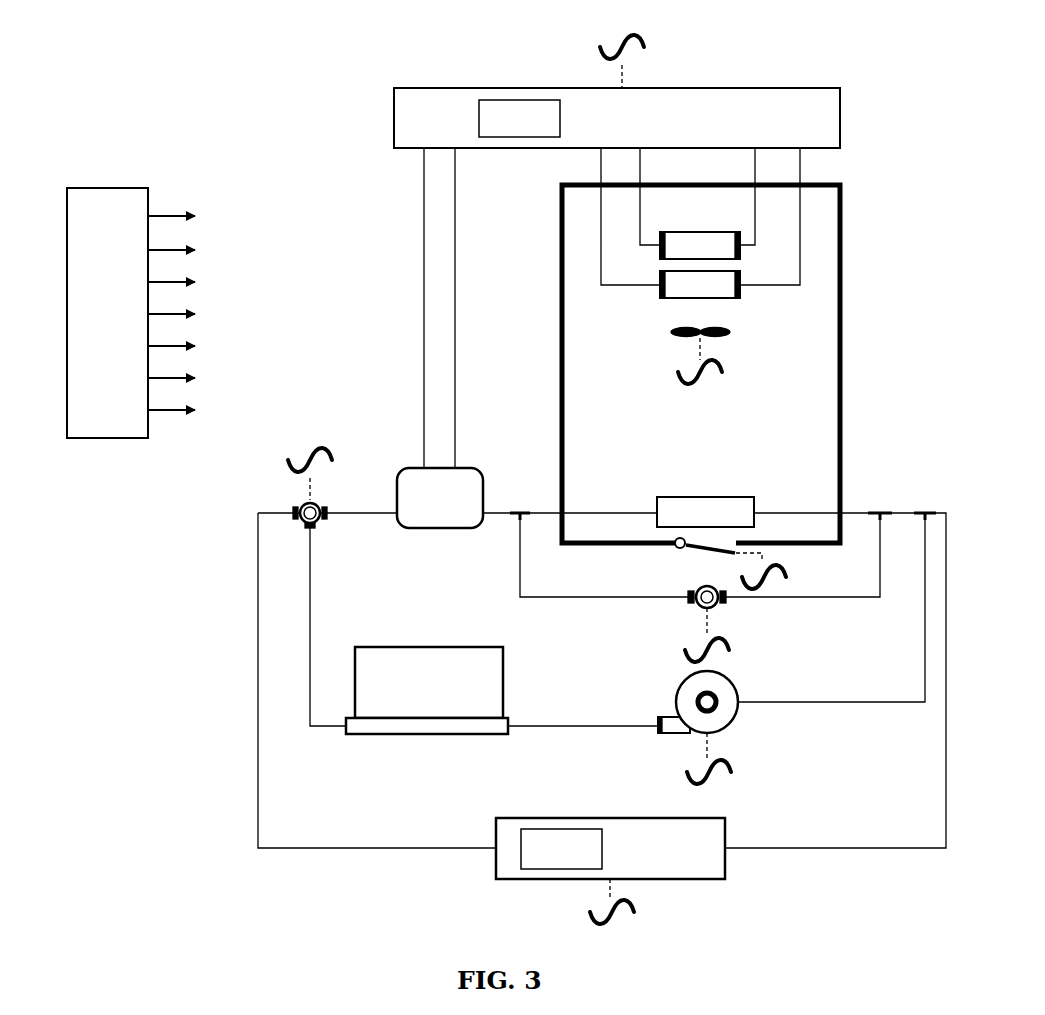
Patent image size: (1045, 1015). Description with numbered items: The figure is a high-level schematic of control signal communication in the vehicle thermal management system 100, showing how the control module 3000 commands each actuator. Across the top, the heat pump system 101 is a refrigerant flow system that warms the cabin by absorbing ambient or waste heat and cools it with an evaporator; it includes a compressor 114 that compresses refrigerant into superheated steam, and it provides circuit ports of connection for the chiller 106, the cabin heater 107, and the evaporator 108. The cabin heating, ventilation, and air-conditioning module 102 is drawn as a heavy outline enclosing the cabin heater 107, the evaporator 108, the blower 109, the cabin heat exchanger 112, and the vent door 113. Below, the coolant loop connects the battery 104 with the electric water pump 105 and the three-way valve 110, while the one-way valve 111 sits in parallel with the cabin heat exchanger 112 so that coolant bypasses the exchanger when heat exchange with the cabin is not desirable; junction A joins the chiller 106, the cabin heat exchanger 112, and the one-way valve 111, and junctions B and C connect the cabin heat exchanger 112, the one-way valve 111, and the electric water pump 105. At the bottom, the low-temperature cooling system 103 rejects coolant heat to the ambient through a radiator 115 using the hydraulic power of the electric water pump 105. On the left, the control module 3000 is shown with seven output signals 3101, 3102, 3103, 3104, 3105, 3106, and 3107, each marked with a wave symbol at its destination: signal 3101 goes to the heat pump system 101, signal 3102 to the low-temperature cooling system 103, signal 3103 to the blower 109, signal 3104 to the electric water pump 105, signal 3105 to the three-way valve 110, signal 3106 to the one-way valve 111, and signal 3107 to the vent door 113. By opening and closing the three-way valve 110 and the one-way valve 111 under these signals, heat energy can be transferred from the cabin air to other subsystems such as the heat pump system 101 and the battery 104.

The vehicle thermal management system 100 is at (350, 175).
The heat pump system 101 is at (840, 122).
The cabin heating, ventilation, and air-conditioning (HVAC) module 102 is at (560, 360).
The low-temperature cooling system 103 is at (727, 818).
The battery 104 is at (428, 735).
The electric water pump 105 is at (712, 708).
The chiller 106 is at (405, 468).
The cabin heater 107 is at (670, 232).
The evaporator 108 is at (663, 302).
The blower 109 is at (688, 338).
The three-way valve 110 is at (320, 523).
The one-way valve 111 is at (722, 605).
The cabin heat exchanger 112 is at (705, 497).
The vent door 113 is at (695, 550).
The compressor 114 is at (520, 138).
The radiator 115 is at (558, 830).
The control module 3000 is at (105, 188).
The output signal 3101 is at (625, 73).
The output signal 3102 is at (608, 888).
The output signal 3103 is at (703, 352).
The output signal 3104 is at (700, 745).
The output signal 3105 is at (305, 492).
The output signal 3106 is at (700, 625).
The output signal 3107 is at (765, 555).